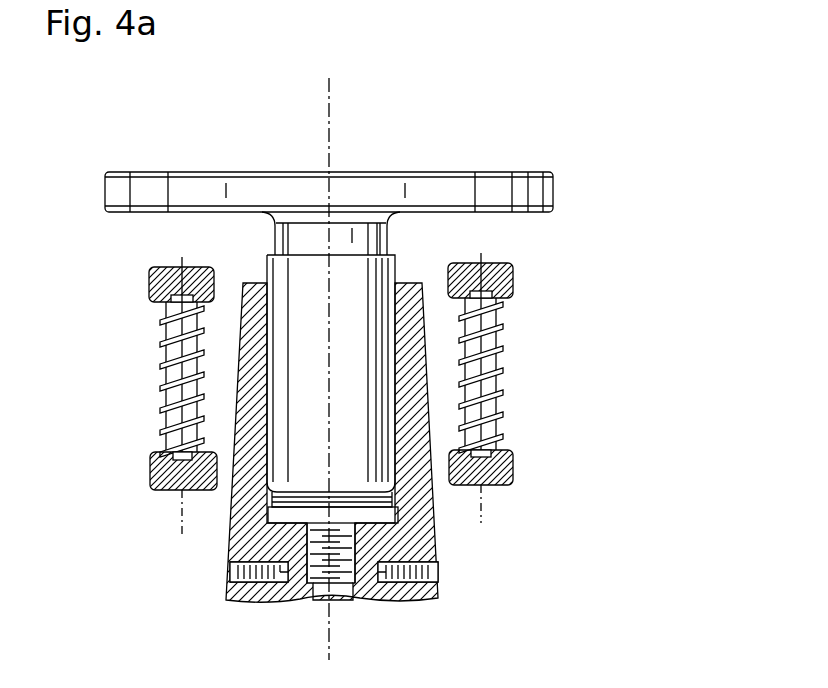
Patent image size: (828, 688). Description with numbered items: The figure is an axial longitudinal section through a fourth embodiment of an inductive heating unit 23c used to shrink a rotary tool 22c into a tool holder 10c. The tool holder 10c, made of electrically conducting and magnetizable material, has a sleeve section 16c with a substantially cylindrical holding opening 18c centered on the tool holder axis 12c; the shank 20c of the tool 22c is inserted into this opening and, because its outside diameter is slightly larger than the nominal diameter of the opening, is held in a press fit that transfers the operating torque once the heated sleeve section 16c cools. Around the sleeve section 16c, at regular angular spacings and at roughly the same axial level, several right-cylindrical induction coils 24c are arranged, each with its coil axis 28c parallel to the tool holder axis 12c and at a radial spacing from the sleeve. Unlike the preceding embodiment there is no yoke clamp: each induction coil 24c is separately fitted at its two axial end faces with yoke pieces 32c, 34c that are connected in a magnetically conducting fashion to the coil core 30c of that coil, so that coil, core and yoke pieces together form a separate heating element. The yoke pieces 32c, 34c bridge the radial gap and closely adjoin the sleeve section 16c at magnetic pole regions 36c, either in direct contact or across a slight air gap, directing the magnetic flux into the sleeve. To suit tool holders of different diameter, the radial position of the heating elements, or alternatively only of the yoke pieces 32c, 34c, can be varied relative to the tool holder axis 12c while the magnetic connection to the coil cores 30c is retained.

The tool holder 10c is at (508, 571).
The tool holder axis 12c is at (330, 108).
The sleeve section 16c is at (418, 412).
The holding opening 18c is at (273, 305).
The shank 20c is at (300, 343).
The rotary tool 22c is at (152, 162).
The heating unit 23c is at (592, 284).
The induction coil 24c is at (167, 413).
The coil axis 28c is at (180, 518).
The coil core 30c is at (173, 368).
The yoke piece 32c is at (160, 470).
The yoke piece 34c is at (152, 278).
The magnetic pole region 36c is at (216, 282).